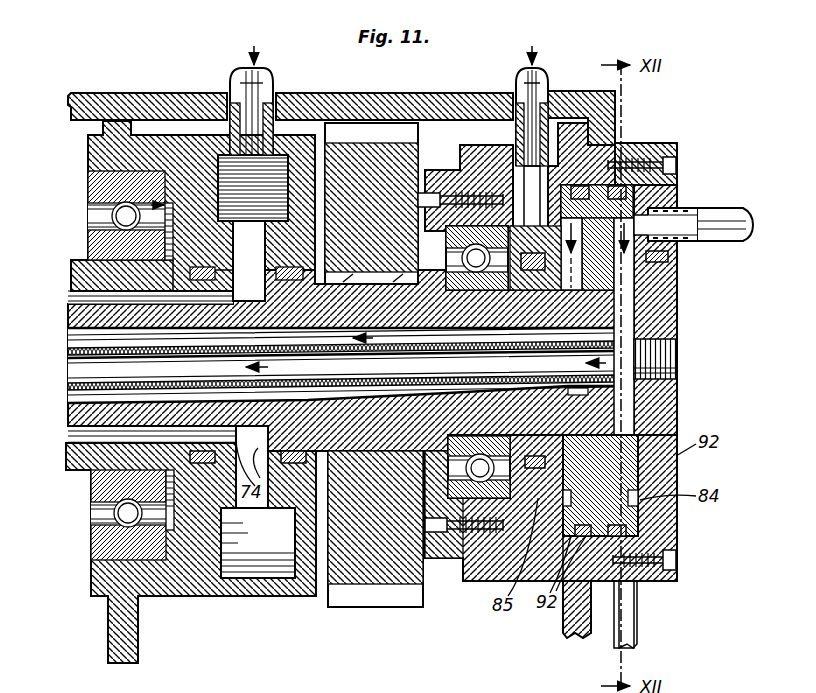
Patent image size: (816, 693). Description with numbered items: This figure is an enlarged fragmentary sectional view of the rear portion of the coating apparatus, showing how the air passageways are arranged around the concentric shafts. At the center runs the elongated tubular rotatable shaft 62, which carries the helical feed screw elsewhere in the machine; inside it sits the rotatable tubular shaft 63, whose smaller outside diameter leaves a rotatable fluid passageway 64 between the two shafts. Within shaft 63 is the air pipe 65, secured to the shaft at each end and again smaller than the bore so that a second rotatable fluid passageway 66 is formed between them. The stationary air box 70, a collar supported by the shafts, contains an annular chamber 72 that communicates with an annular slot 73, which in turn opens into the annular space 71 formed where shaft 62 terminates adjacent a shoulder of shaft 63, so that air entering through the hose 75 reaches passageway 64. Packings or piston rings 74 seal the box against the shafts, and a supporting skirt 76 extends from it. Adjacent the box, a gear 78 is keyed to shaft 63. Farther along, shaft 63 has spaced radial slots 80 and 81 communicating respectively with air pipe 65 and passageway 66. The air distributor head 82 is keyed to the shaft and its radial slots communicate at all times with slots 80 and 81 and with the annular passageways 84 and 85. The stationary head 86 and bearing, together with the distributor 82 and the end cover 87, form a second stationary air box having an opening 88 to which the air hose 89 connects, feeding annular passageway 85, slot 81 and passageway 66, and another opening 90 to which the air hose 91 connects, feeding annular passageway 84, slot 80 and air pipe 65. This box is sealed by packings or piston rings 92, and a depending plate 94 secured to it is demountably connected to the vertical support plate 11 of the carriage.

The vertical support 11 is at (612, 628).
The tubular rotatable shaft 62 is at (72, 262).
The rotatable tubular shaft 63 is at (65, 310).
The fluid passageway 64 is at (64, 287).
The air pipe 65 is at (64, 350).
The fluid passageway 66 is at (64, 378).
The stationary air box 70 is at (173, 125).
The annular space 71 is at (302, 336).
The annular chamber 72 is at (253, 188).
The annular slot 73 is at (273, 206).
The packings or piston rings 74 is at (245, 286).
The hose 75 is at (268, 72).
The supporting skirt 76 is at (122, 640).
The gear 78 is at (374, 132).
The radial slot 80 is at (626, 300).
The radial slot 81 is at (562, 305).
The air distributor head 82 is at (672, 267).
The annular passageway 84 is at (640, 212).
The annular passageway 85 is at (520, 224).
The stationary head 86 is at (478, 138).
The end cover 87 is at (665, 548).
The opening 88 is at (527, 184).
The air hose 89 is at (542, 78).
The opening 90 is at (700, 210).
The air hose 91 is at (770, 219).
The packings or piston rings 92 is at (662, 250).
The depending plate 94 is at (556, 620).